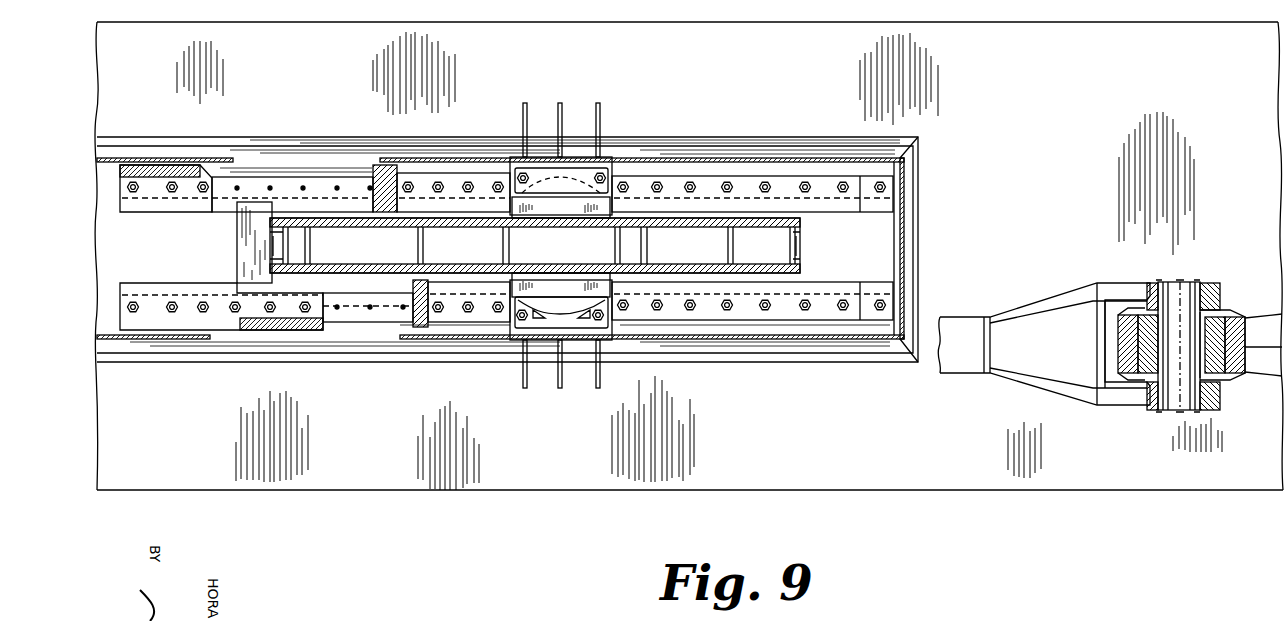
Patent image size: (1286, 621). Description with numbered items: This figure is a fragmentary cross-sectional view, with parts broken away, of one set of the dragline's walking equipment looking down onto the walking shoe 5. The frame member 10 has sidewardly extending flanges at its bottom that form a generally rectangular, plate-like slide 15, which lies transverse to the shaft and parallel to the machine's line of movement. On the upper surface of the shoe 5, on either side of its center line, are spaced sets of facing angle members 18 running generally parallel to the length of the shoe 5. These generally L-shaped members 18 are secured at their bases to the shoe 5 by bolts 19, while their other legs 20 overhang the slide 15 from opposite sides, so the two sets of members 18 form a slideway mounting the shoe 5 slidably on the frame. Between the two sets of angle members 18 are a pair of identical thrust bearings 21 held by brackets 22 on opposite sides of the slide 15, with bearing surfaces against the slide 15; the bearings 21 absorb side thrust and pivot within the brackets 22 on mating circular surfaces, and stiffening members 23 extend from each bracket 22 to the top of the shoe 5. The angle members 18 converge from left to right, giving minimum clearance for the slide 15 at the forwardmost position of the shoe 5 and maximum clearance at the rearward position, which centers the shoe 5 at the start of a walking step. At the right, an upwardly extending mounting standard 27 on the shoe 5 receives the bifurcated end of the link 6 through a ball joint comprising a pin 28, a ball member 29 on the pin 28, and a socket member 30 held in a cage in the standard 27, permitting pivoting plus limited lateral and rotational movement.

The walking shoe 5 is at (414, 492).
The link member 6 is at (945, 380).
The frame member 10 is at (804, 229).
The slide 15 is at (247, 240).
The angle members 18 is at (425, 172).
The bolts 19 is at (168, 192).
The legs 20 is at (177, 212).
The thrust bearings 21 is at (567, 297).
The brackets 22 is at (583, 168).
The stiffening members 23 is at (560, 103).
The mounting standard 27 is at (1265, 325).
The pin 28 is at (1170, 395).
The ball member 29 is at (1215, 330).
The socket member 30 is at (1118, 340).